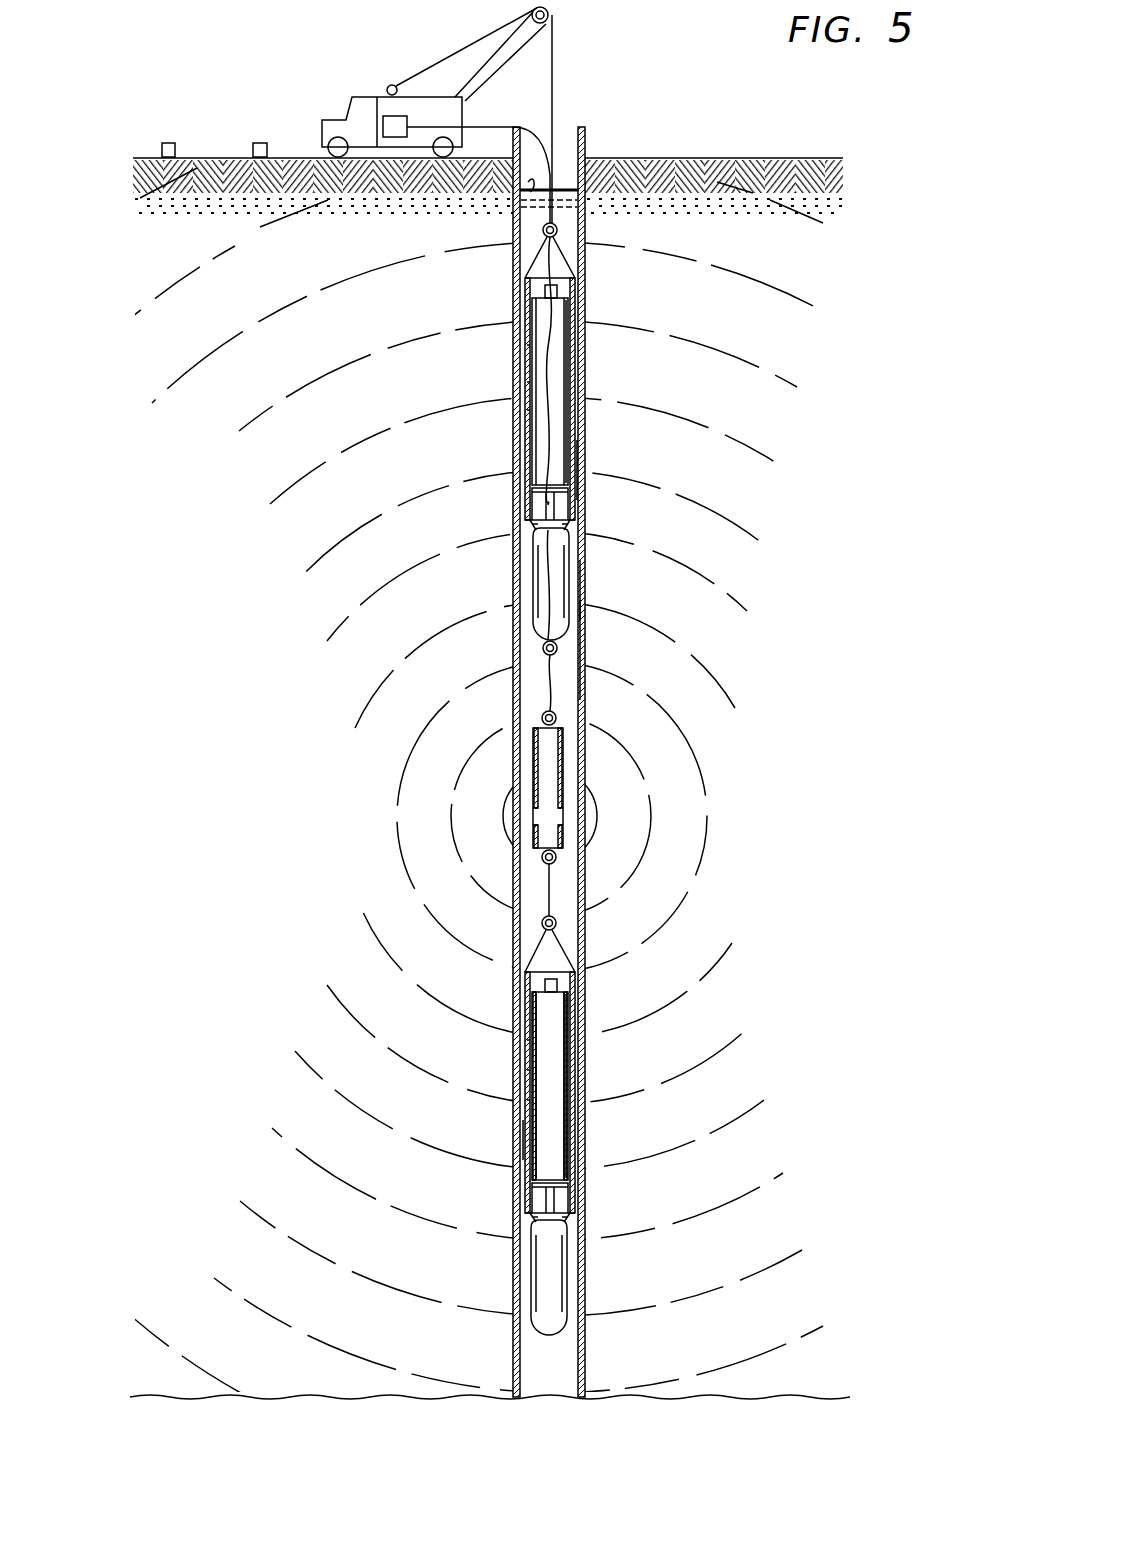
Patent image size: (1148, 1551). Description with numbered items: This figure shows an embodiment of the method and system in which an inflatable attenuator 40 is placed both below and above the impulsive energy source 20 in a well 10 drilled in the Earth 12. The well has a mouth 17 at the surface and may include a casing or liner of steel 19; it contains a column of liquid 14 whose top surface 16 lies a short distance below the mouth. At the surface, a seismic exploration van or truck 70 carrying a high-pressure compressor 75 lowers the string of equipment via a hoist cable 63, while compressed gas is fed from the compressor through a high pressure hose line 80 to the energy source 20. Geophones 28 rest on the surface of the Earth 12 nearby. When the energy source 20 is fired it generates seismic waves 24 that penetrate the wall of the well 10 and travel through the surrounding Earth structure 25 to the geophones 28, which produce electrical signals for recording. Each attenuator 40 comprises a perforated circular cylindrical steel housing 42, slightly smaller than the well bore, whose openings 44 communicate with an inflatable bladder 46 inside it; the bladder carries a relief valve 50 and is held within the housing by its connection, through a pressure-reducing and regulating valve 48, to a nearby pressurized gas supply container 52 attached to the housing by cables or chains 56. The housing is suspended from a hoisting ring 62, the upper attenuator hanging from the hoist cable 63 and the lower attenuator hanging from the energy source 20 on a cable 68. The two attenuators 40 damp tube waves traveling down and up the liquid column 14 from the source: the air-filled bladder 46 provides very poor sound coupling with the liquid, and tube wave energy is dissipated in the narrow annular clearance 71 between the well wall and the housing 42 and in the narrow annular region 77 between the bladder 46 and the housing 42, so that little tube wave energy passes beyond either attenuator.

The well 10 is at (588, 596).
The Earth 12 is at (783, 160).
The column of liquid 14 is at (588, 679).
The top surface 16 is at (532, 182).
The mouth 17 is at (563, 134).
The casing or liner of steel 19 is at (588, 640).
The impulsive energy source 20 is at (555, 762).
The seismic waves 24 is at (597, 838).
The Earth structure 25 is at (940, 753).
The geophones 28 is at (257, 143).
The inflatable attenuator 40 is at (590, 392).
The housing 42 is at (573, 373).
The openings 44 is at (525, 410).
The inflatable bladder 46 is at (555, 423).
The pressure-reducing and regulating valve 48 is at (546, 502).
The relief valve 50 is at (557, 292).
The pressurized gas supply container 52 is at (540, 578).
The cables or chains 56 is at (538, 525).
The hoisting ring 62 is at (558, 229).
The hoist cable 63 is at (554, 90).
The cable 68 is at (553, 705).
The seismic exploration van or truck 70 is at (340, 113).
The annular clearance 71 is at (578, 470).
The high-pressure compressor 75 is at (395, 116).
The annular region 77 is at (568, 443).
The high pressure hose line 80 is at (490, 126).